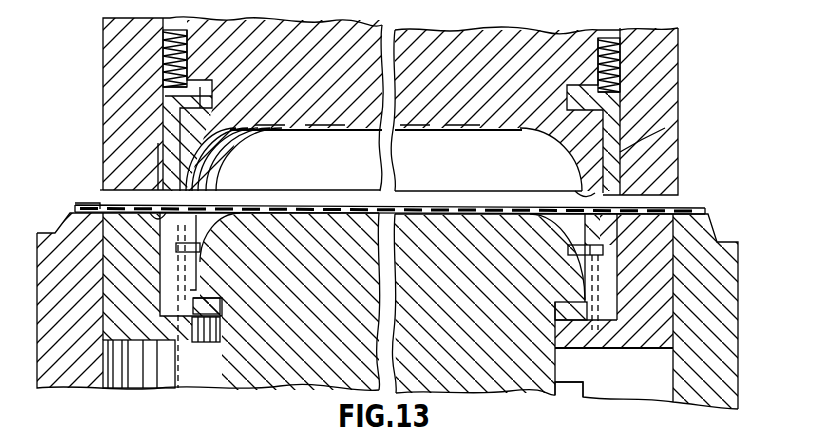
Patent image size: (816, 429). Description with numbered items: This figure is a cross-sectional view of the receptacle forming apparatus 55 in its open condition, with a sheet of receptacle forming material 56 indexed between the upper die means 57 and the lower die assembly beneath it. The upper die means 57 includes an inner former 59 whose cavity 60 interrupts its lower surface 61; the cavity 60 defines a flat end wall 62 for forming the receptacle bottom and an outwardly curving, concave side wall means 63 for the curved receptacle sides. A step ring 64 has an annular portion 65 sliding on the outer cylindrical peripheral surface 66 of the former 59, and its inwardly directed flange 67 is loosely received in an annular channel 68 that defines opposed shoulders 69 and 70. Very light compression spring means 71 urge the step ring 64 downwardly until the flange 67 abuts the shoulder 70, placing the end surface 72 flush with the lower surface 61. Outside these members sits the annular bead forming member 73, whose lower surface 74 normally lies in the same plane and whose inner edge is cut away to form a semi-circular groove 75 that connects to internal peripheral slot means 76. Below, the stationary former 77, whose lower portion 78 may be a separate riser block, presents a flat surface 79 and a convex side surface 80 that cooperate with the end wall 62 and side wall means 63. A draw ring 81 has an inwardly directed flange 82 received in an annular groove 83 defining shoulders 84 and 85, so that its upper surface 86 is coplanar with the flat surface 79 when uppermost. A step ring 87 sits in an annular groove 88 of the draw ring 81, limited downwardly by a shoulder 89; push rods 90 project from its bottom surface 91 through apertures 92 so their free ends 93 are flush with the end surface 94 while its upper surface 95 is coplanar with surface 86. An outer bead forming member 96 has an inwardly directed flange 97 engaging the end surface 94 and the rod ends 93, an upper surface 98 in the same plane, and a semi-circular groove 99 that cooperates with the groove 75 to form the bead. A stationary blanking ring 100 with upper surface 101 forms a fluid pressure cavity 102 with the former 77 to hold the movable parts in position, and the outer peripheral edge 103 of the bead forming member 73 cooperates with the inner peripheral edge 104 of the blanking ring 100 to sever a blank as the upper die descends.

The apparatus 55 is at (711, 40).
The sheet of receptacle forming material 56 is at (700, 211).
The upper die means 57 is at (709, 73).
The former 59 is at (455, 42).
The cavity 60 is at (465, 173).
The lower surface 61 is at (585, 196).
The end wall 62 is at (478, 130).
The side wall means 63 is at (555, 152).
The step ring 64 is at (160, 108).
The annular portion 65 is at (170, 155).
The outer cylindrical peripheral surface 66 is at (176, 133).
The inwardly directed flange 67 is at (240, 95).
The annular channel 68 is at (200, 78).
The shoulder 69 is at (205, 80).
The shoulder 70 is at (205, 100).
The compression spring means 71 is at (162, 47).
The end surface 72 is at (222, 159).
The bead forming member 73 is at (670, 92).
The lower surface 74 is at (684, 207).
The semi-circular groove 75 is at (631, 188).
The internal peripheral slot means 76 is at (645, 148).
The former 77 is at (326, 213).
The lower portion 78 is at (480, 380).
The flat surface 79 is at (412, 213).
The convex side surface 80 is at (555, 232).
The draw ring 81 is at (608, 288).
The inwardly directed flange 82 is at (560, 302).
The annular groove 83 is at (563, 362).
The shoulder 84 is at (570, 292).
The shoulder 85 is at (572, 380).
The upper surface 86 is at (162, 205).
The step ring 87 is at (205, 232).
The annular groove 88 is at (195, 248).
The shoulder 89 is at (600, 250).
The push rods 90 is at (178, 278).
The bottom surface 91 is at (178, 248).
The apertures 92 is at (185, 305).
The free ends 93 is at (144, 364).
The end surface 94 is at (572, 328).
The upper surface 95 is at (246, 159).
The bead forming member 96 is at (660, 327).
The inwardly directed flange 97 is at (192, 328).
The upper surface 98 is at (680, 207).
The semi-circular groove 99 is at (628, 216).
The blanking ring 100 is at (725, 274).
The upper surface 101 is at (80, 206).
The cavity 102 is at (660, 383).
The outer peripheral edge 103 is at (100, 190).
The inner peripheral edge 104 is at (100, 205).